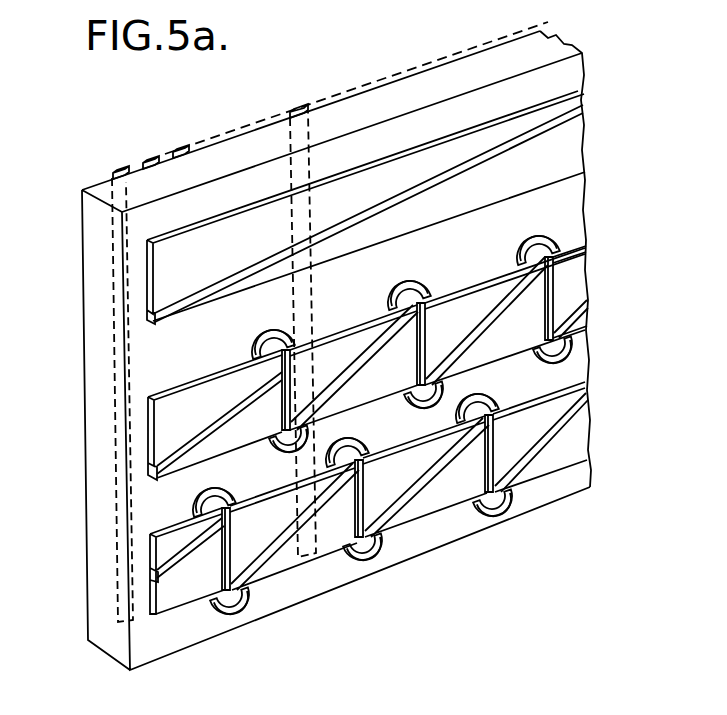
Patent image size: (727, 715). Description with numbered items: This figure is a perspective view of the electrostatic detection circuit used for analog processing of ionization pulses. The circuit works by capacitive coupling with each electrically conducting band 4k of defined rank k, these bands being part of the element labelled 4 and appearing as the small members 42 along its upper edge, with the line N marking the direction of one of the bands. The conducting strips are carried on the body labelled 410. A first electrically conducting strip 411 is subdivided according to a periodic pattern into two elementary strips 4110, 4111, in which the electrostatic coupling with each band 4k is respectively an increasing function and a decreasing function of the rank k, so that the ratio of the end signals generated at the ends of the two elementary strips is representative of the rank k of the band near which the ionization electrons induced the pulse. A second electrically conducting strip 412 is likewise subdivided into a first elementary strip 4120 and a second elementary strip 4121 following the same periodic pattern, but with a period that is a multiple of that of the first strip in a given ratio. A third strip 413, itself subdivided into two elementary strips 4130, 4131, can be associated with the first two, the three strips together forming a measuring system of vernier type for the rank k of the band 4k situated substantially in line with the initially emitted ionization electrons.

The mounting board unit 4 is at (97, 186).
The terminal tabs 42 is at (122, 168).
The band of rank k 4k is at (296, 313).
The normal reference line N is at (356, 77).
The base plate 410 is at (97, 360).
The first strip 411 is at (160, 272).
The first elementary strip of first strip 4110 is at (530, 121).
The second elementary strip of first strip 4111 is at (555, 152).
The second strip 412 is at (165, 418).
The first elementary strip of second strip 4120 is at (497, 293).
The second elementary strip of second strip 4121 is at (513, 322).
The third strip 413 is at (190, 565).
The first elementary strip of third strip 4130 is at (540, 408).
The second elementary strip of third strip 4131 is at (560, 442).